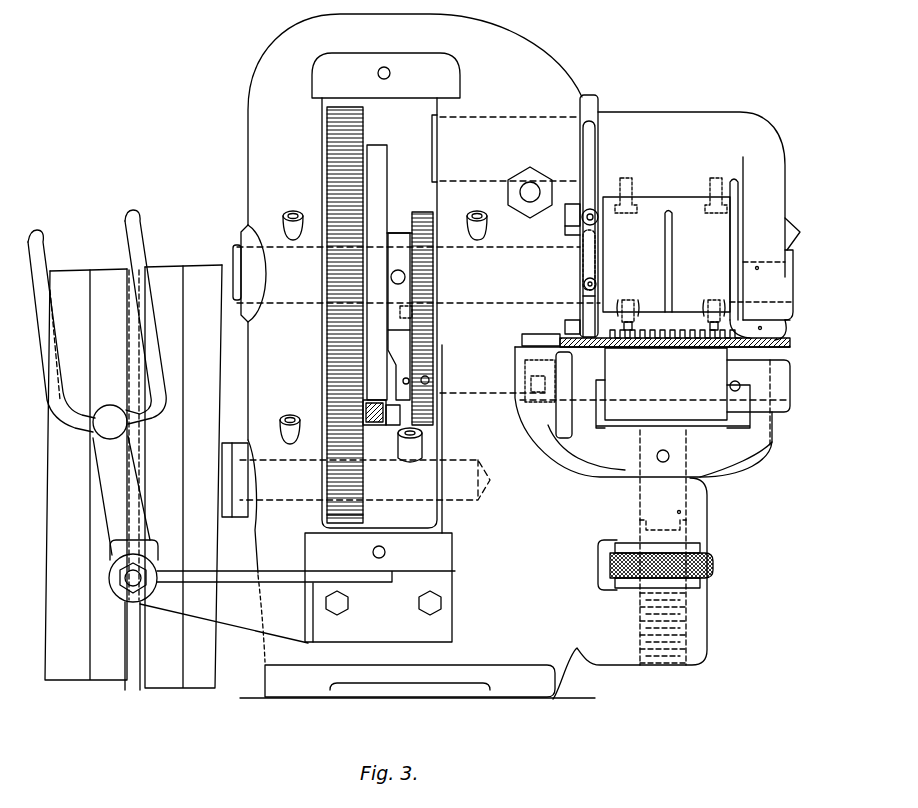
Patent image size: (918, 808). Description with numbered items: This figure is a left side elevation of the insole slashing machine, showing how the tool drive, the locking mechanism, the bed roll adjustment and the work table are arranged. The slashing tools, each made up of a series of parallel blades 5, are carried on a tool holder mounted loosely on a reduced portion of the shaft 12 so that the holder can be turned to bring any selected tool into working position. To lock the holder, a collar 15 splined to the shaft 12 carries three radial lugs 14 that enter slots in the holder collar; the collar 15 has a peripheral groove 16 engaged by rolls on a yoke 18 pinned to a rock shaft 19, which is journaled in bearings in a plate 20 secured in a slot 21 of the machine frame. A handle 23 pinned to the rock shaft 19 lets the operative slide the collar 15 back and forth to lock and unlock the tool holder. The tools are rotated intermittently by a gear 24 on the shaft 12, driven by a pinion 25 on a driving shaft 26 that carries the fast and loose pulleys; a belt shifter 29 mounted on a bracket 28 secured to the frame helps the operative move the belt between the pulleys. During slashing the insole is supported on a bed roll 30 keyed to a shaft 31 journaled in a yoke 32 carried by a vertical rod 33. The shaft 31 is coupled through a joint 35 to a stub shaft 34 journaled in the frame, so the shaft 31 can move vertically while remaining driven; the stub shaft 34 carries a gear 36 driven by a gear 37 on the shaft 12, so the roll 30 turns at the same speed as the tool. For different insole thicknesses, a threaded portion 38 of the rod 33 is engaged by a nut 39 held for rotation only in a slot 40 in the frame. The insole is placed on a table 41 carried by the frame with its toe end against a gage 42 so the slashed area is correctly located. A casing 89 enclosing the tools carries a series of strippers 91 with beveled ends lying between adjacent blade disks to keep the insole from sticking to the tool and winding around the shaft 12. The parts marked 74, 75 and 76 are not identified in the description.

The parallel blades 5 is at (652, 350).
The shaft 12 is at (757, 268).
The radial lugs 14 is at (760, 328).
The collar 15 is at (585, 296).
The peripheral groove 16 is at (583, 326).
The yoke 18 is at (587, 268).
The rock shaft 19 is at (598, 221).
The plate 20 is at (583, 210).
The slot 21 is at (570, 224).
The handle 23 is at (590, 174).
The gear 24 is at (327, 174).
The pinion 25 is at (325, 516).
The driving shaft 26 is at (263, 468).
The bracket 28 is at (287, 622).
The belt shifter 29 is at (115, 505).
The bed roll 30 is at (712, 458).
The shaft 31 is at (770, 446).
The yoke 32 is at (717, 416).
The vertical rod 33 is at (679, 512).
The stub shaft 34 is at (473, 385).
The joint 35 is at (540, 402).
The gear 36 is at (428, 381).
The gear 37 is at (418, 290).
The threaded portion 38 is at (680, 626).
The nut 39 is at (714, 566).
The slot 40 is at (608, 590).
The table 41 is at (740, 349).
The gage 42 is at (530, 337).
The pawl 74 is at (395, 362).
The block 75 is at (370, 410).
The bar 76 is at (380, 196).
The casing 89 is at (666, 245).
The strippers 91 is at (643, 323).